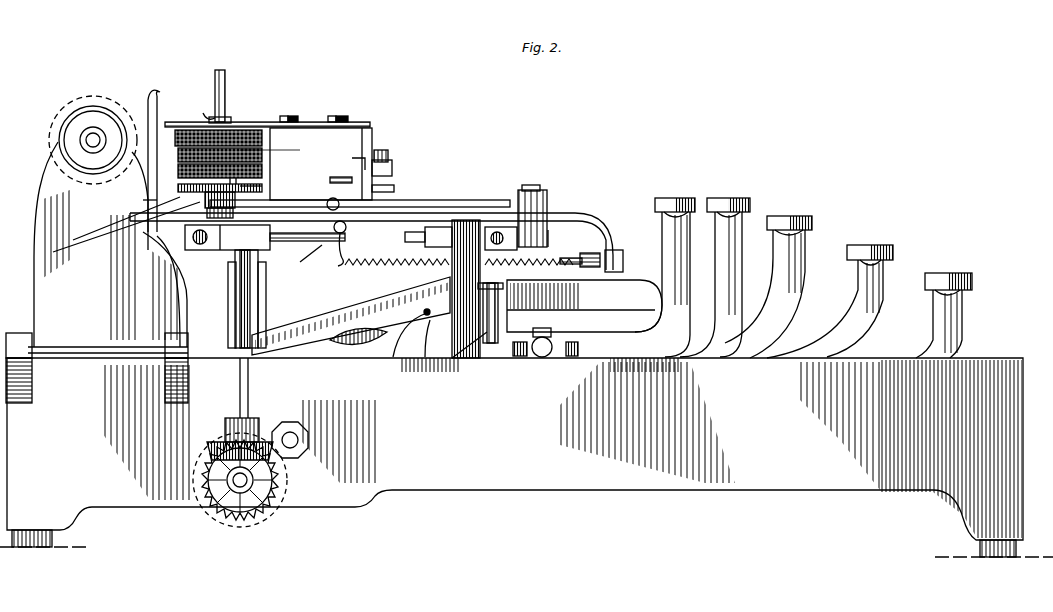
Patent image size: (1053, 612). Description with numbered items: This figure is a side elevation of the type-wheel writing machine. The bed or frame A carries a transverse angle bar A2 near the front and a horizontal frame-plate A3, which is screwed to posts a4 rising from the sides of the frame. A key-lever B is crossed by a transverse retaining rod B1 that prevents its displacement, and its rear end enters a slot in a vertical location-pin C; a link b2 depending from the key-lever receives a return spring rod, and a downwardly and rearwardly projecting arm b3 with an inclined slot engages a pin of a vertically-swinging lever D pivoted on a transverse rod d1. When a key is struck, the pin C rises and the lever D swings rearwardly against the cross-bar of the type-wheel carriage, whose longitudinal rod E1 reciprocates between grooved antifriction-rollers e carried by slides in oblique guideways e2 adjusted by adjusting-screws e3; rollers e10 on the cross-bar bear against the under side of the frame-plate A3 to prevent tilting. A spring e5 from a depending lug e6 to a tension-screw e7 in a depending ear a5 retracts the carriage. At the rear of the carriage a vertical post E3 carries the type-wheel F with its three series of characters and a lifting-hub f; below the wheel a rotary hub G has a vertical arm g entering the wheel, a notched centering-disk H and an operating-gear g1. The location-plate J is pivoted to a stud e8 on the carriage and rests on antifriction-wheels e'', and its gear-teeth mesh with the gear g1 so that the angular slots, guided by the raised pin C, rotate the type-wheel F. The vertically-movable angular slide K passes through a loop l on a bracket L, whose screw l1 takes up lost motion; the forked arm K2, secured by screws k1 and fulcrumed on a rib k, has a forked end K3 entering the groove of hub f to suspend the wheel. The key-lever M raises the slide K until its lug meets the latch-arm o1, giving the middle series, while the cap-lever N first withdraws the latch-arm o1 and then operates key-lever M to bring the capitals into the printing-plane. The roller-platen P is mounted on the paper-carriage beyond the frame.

The bed or frame A is at (591, 484).
The transverse angle bar A2 is at (470, 340).
The horizontal frame-plate A3 is at (492, 222).
The key-lever B is at (610, 300).
The transverse retaining rod or bar B1 is at (506, 313).
The location-pin C is at (258, 250).
The vertically-swinging lever D is at (333, 350).
The longitudinal rod E1 is at (300, 243).
The vertical post E3 is at (226, 93).
The type-wheel F is at (262, 158).
The rotary hub or sleeve G is at (187, 188).
The peripherally-notched centering-disk H is at (200, 199).
The location-plate J is at (482, 208).
The vertically-movable angular slide K is at (372, 148).
The forked arm or horizontal member K2 is at (268, 122).
The forked end K3 is at (341, 185).
The bracket L is at (392, 175).
The key-lever M is at (732, 295).
The cap-lever N is at (672, 263).
The roller-platen P is at (88, 116).
The post a4 is at (232, 303).
The depending ear or lug a5 is at (600, 272).
The link b2 is at (424, 314).
The downwardly and rearwardly projecting arm b3 is at (398, 355).
The transverse rod d1 is at (293, 450).
The grooved antifriction-roller e is at (317, 213).
The antifriction-wheel e'' is at (360, 206).
The oblique guideway e2 is at (228, 252).
The adjusting-screw e3 is at (202, 246).
The spring e5 is at (459, 272).
The depending lug e6 is at (334, 258).
The tension-screw e7 is at (606, 258).
The stud e8 is at (548, 222).
The roller e10 is at (313, 253).
The concentric lifting-hub f is at (200, 111).
The vertical arm g is at (262, 190).
The operating-gear g1 is at (85, 243).
The transverse rib k is at (285, 159).
The screw k1 is at (343, 118).
The loop l is at (351, 163).
The screw l1 is at (388, 163).
The latch-arm o1 is at (392, 188).